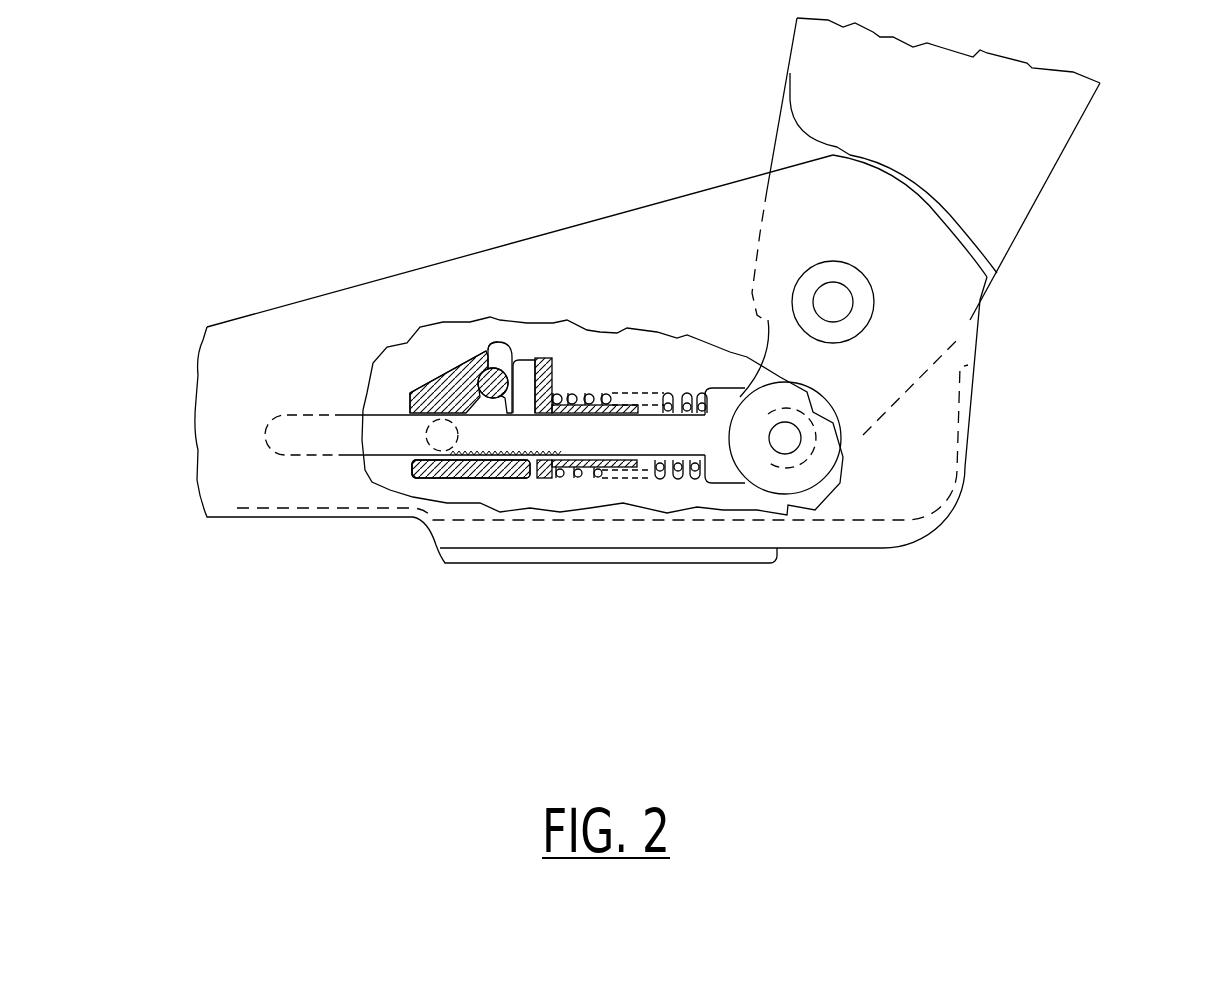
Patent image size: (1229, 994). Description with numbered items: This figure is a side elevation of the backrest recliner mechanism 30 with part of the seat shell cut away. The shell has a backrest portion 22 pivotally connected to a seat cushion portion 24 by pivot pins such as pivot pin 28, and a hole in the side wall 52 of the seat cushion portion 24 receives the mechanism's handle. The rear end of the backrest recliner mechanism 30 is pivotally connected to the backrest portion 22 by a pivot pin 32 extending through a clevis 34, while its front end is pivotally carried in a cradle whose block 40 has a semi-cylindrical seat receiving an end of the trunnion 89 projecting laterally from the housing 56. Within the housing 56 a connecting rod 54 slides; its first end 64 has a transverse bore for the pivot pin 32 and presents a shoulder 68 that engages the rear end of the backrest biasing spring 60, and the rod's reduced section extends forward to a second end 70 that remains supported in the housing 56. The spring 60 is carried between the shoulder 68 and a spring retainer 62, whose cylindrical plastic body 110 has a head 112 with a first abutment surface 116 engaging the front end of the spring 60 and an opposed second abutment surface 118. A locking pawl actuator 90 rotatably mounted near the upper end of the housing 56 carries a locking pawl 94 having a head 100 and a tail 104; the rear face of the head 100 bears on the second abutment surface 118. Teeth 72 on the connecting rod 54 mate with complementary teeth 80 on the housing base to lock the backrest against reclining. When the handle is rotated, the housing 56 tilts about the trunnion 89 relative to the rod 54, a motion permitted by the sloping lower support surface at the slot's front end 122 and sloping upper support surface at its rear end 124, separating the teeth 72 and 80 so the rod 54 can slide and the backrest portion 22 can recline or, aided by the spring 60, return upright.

The backrest portion 22 is at (1078, 155).
The seat cushion portion 24 is at (977, 370).
The pivot pin 28 is at (840, 303).
The backrest recliner mechanism 30 is at (388, 363).
The pivot pin 32 is at (788, 441).
The clevis 34 is at (800, 473).
The cradle section 40 is at (382, 468).
The side wall 52 is at (223, 322).
The connecting rod 54 is at (383, 412).
The housing 56 is at (436, 375).
The backrest biasing spring 60 is at (686, 396).
The spring retainer 62 is at (625, 470).
The first end 64 is at (911, 495).
The shoulder 68 is at (555, 529).
The second end 70 is at (273, 452).
The teeth 72 is at (478, 476).
The teeth 80 is at (471, 469).
The trunnion 89 is at (433, 475).
The locking pawl actuator 90 is at (486, 344).
The locking pawl 94 is at (497, 335).
The head 100 is at (507, 352).
The tail 104 is at (497, 397).
The body 110 is at (627, 395).
The head 112 is at (547, 473).
The first abutment surface 116 is at (552, 358).
The second abutment surface 118 is at (528, 358).
The front end 122 is at (410, 475).
The rear end 124 is at (450, 371).